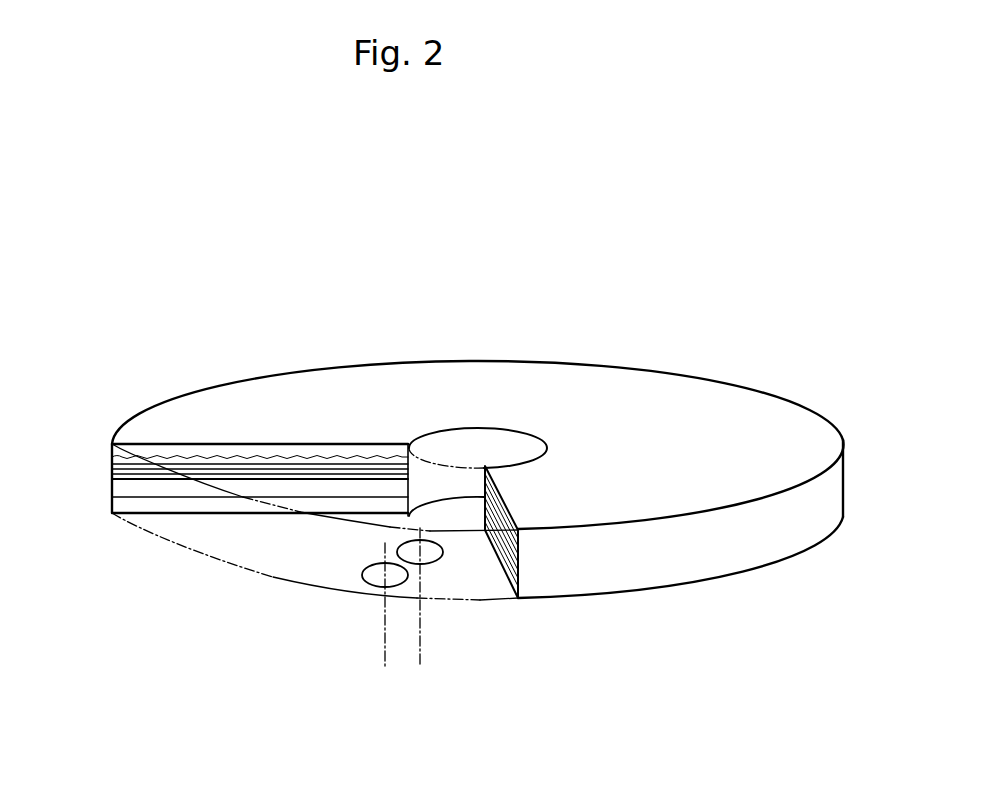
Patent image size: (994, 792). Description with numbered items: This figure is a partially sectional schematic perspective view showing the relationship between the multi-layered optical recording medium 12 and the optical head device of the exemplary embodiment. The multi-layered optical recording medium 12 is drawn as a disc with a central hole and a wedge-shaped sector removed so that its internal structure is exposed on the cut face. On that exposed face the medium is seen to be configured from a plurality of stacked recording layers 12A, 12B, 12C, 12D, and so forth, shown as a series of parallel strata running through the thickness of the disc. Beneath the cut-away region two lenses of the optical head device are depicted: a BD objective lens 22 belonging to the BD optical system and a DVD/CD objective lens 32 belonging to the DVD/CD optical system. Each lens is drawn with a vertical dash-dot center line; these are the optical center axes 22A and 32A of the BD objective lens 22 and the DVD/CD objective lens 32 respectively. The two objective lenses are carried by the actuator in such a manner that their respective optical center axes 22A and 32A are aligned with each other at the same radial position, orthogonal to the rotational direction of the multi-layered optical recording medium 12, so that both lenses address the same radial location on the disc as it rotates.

The multi-layered optical recording medium 12 is at (664, 362).
The recording layer 12A is at (115, 463).
The recording layer 12B is at (115, 470).
The recording layer 12C is at (127, 478).
The recording layer 12D is at (113, 492).
The BD objective lens 22 is at (374, 582).
The DVD/CD objective lens 32 is at (424, 563).
The optical center axis 22A is at (382, 650).
The optical center axis 32A is at (420, 655).